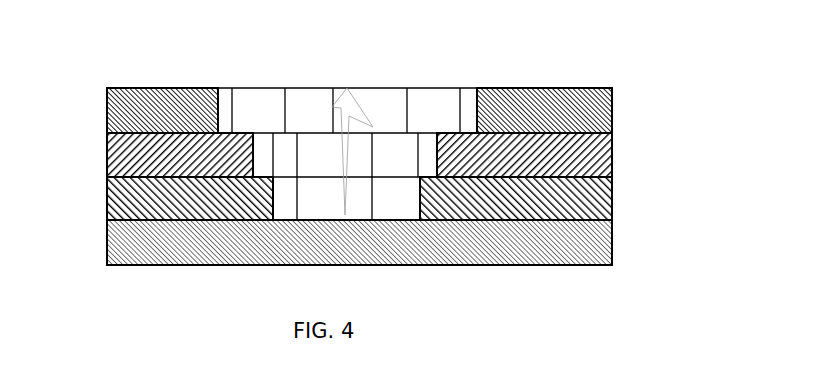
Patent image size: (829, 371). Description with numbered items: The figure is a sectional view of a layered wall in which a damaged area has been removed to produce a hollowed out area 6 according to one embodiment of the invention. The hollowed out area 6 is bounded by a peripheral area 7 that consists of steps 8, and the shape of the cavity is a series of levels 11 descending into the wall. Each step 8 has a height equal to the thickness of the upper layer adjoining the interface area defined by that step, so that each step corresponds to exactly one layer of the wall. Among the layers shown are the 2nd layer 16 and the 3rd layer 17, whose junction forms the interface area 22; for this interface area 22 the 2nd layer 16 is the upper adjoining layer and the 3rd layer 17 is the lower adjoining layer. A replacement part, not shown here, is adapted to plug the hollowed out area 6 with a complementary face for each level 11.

The hollowed out area 6 is at (426, 93).
The peripheral area 7 is at (207, 104).
The steps 8 is at (442, 188).
The level 11 is at (316, 179).
The 2nd layer 16 is at (133, 154).
The 3rd layer 17 is at (110, 199).
The interface area 22 is at (172, 222).